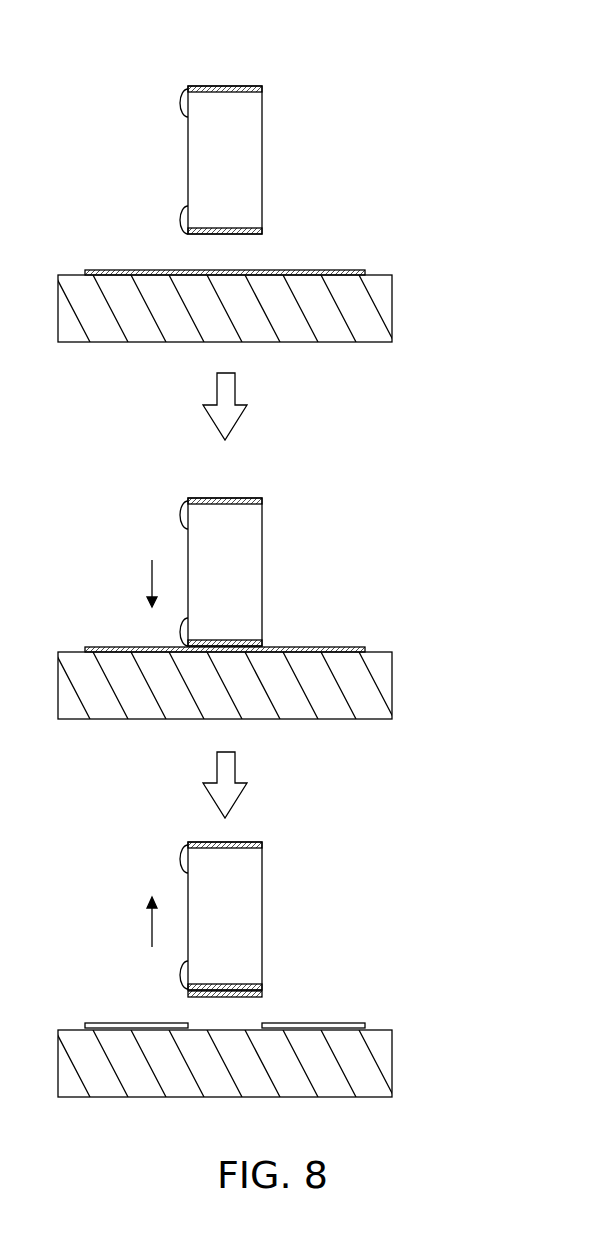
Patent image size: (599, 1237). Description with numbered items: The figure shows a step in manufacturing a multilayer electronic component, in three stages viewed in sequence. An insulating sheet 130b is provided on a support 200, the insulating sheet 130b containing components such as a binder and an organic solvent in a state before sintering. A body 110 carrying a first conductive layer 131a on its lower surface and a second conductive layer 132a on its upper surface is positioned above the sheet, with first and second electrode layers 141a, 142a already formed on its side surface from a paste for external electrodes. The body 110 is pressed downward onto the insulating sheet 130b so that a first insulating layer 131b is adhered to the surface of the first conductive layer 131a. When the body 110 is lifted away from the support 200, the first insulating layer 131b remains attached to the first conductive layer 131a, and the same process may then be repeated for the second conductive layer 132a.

The body 110 is at (262, 160).
The second conductive layer 132a is at (262, 88).
The first conductive layer 131a is at (262, 232).
The first insulating layer 131b is at (262, 994).
The second electrode layer 142a is at (182, 103).
The first electrode layer 141a is at (182, 221).
The insulating sheet 130b is at (365, 272).
The support 200 is at (392, 307).